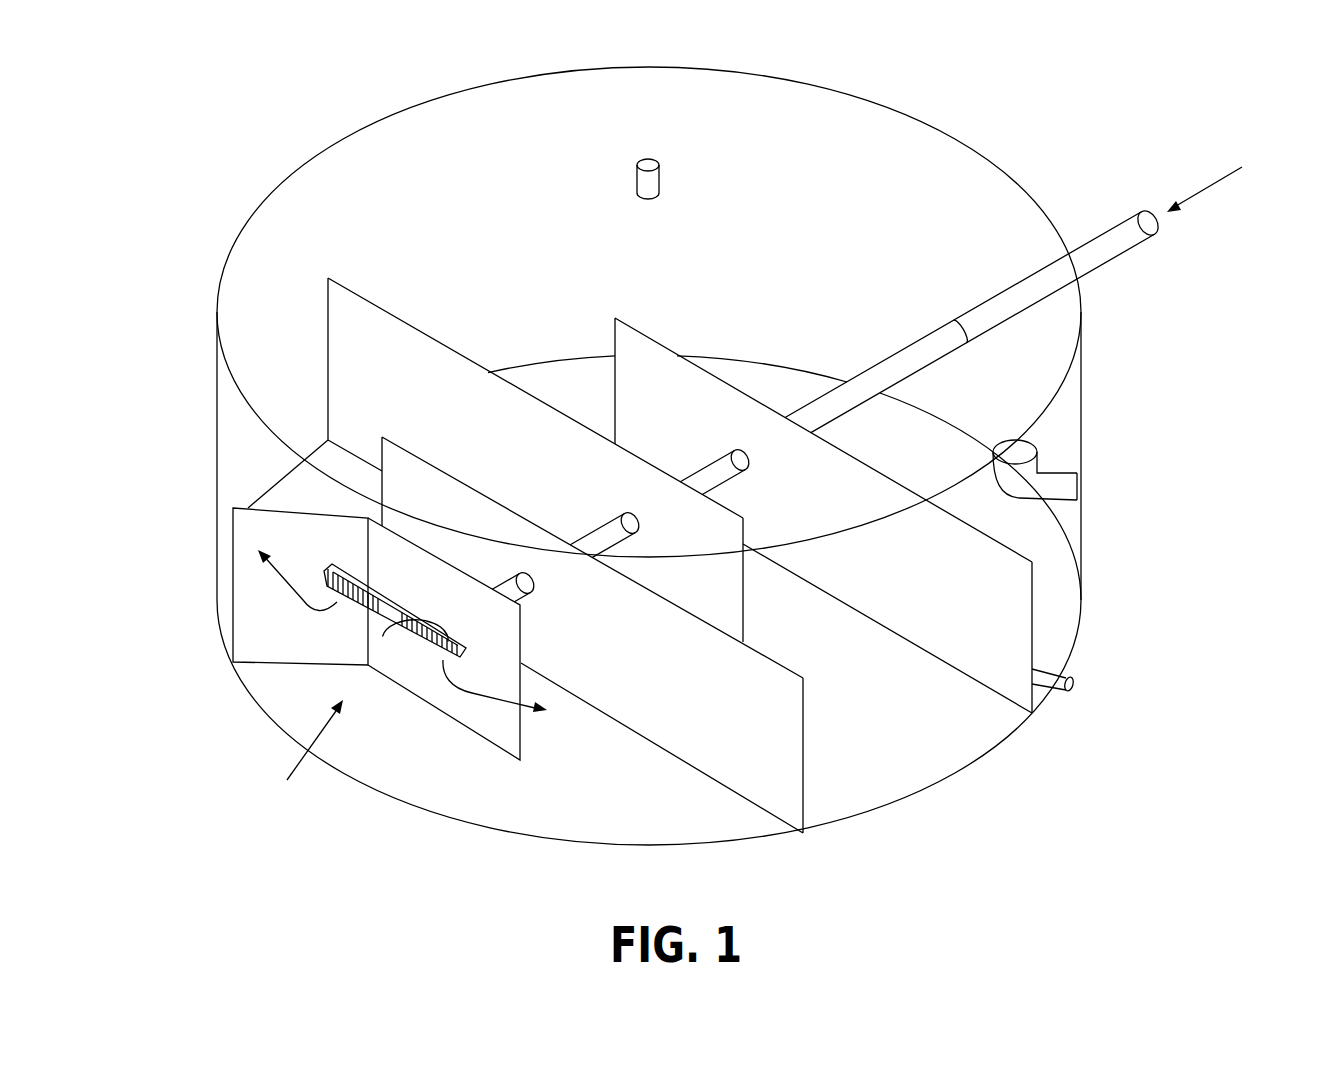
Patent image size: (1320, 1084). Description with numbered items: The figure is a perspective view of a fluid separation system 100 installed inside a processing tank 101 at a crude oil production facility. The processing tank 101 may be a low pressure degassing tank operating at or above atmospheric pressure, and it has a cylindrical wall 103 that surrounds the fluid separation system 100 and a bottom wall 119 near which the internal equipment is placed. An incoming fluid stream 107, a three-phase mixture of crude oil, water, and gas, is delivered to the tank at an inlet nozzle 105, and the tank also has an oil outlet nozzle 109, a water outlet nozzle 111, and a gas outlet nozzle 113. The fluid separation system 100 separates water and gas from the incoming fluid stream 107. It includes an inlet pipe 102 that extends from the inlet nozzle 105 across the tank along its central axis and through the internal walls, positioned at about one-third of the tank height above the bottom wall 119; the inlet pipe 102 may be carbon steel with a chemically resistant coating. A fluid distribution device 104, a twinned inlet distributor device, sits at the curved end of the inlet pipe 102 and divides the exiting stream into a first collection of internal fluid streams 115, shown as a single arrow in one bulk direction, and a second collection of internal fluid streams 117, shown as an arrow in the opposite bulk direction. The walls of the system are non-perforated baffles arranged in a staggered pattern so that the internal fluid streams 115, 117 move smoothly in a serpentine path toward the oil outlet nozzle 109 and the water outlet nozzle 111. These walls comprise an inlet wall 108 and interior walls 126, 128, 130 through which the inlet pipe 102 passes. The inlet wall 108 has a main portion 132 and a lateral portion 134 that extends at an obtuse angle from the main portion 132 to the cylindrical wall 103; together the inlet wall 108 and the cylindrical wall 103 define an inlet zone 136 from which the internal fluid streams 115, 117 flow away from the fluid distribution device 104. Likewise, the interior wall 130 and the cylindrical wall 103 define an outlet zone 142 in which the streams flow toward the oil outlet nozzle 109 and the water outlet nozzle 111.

The fluid separation system 100 is at (647, 443).
The processing tank 101 is at (322, 137).
The inlet pipe 102 is at (1110, 230).
The cylindrical wall 103 is at (217, 392).
The fluid distribution device 104 is at (331, 544).
The inlet nozzle 105 is at (1080, 282).
The incoming fluid stream 107 is at (1227, 180).
The inlet wall 108 is at (331, 692).
The oil outlet nozzle 109 is at (1072, 505).
The water outlet nozzle 111 is at (1063, 697).
The gas outlet nozzle 113 is at (660, 181).
The internal fluid streams 115 is at (283, 572).
The internal fluid streams 117 is at (480, 693).
The bottom wall 119 is at (983, 763).
The interior wall 126 is at (805, 753).
The interior wall 128 is at (353, 292).
The interior wall 130 is at (635, 327).
The main portion 132 is at (427, 703).
The lateral portion 134 is at (302, 665).
The inlet zone 136 is at (287, 780).
The outlet zone 142 is at (972, 436).